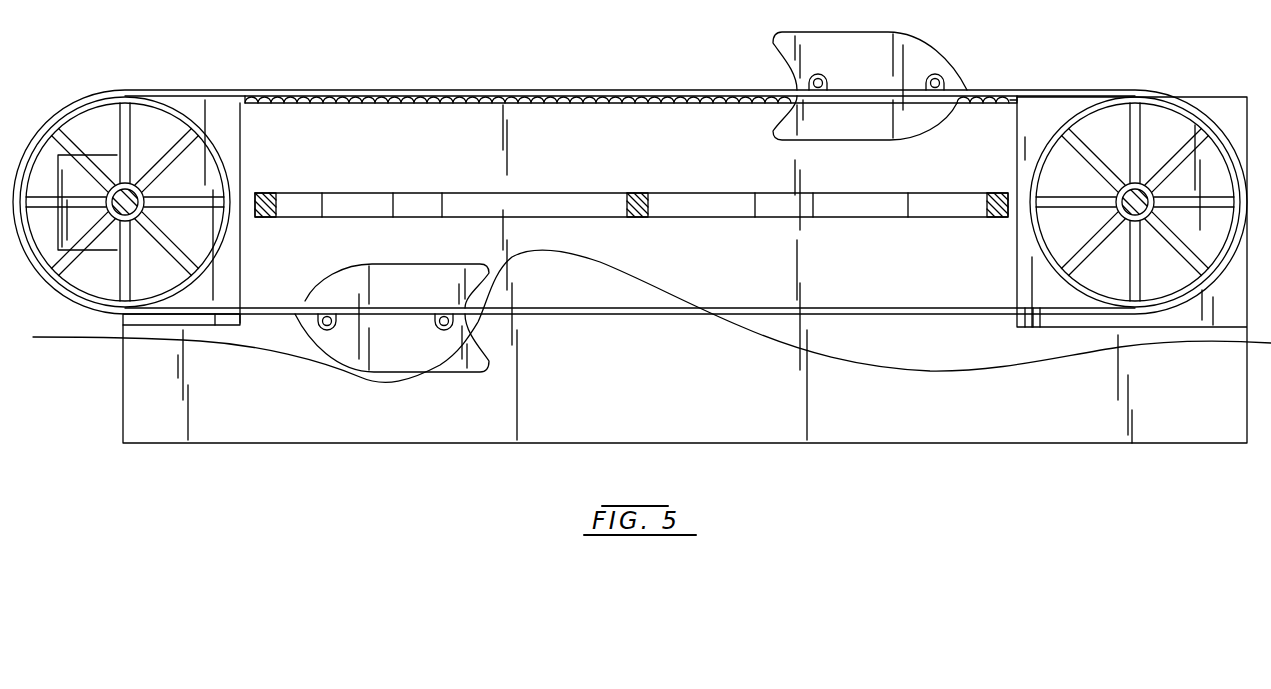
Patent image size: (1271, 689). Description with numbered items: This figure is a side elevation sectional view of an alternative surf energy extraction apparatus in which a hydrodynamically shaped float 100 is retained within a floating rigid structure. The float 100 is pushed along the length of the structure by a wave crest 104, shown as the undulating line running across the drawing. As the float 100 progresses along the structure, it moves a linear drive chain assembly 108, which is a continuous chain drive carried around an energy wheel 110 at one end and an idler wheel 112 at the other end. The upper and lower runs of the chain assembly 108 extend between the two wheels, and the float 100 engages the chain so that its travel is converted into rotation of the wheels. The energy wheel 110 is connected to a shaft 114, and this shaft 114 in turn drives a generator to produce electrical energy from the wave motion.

The hydrodynamically shaped float 100 is at (911, 54).
The wave crest 104 is at (524, 325).
The linear drive chain assembly 108 is at (308, 91).
The energy wheel 110 is at (77, 290).
The idler wheel 112 is at (1161, 105).
The shaft 114 is at (117, 187).